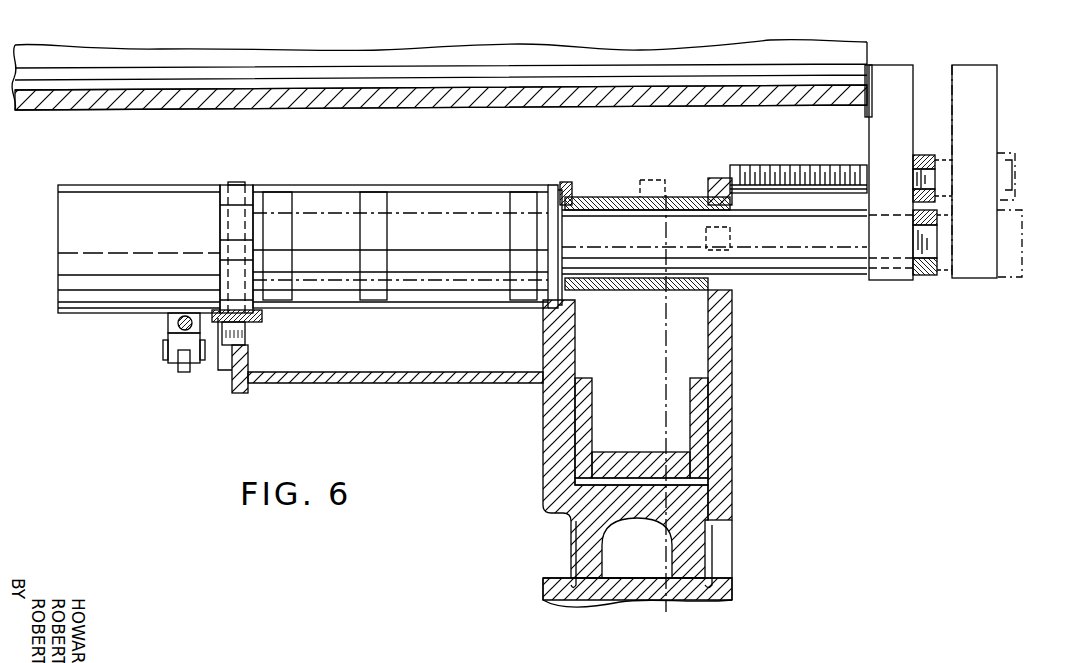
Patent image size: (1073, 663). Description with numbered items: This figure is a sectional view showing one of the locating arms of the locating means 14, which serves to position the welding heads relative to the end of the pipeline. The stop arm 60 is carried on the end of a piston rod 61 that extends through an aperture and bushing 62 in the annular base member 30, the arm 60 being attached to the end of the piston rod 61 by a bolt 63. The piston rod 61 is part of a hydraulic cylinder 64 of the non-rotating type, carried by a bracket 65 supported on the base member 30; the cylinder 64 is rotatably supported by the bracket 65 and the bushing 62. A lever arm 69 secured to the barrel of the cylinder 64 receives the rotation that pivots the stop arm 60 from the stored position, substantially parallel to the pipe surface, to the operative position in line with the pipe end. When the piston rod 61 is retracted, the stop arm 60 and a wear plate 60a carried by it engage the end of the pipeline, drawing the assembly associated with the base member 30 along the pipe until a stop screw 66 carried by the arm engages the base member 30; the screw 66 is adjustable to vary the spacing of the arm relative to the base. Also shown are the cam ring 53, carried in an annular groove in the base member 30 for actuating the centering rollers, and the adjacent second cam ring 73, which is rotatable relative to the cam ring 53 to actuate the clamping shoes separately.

The locating means 14 is at (992, 285).
The base member 30 is at (540, 448).
The cam ring 53 is at (700, 428).
The stop arm 60 is at (982, 65).
The wear plate 60a is at (868, 107).
The piston rod 61 is at (800, 262).
The bushing 62 is at (628, 200).
The bolt 63 is at (925, 278).
The hydraulic cylinder 64 is at (433, 195).
The bracket 65 is at (425, 385).
The stop screw 66 is at (785, 173).
The lever arm 69 is at (170, 325).
The second cam ring 73 is at (585, 432).